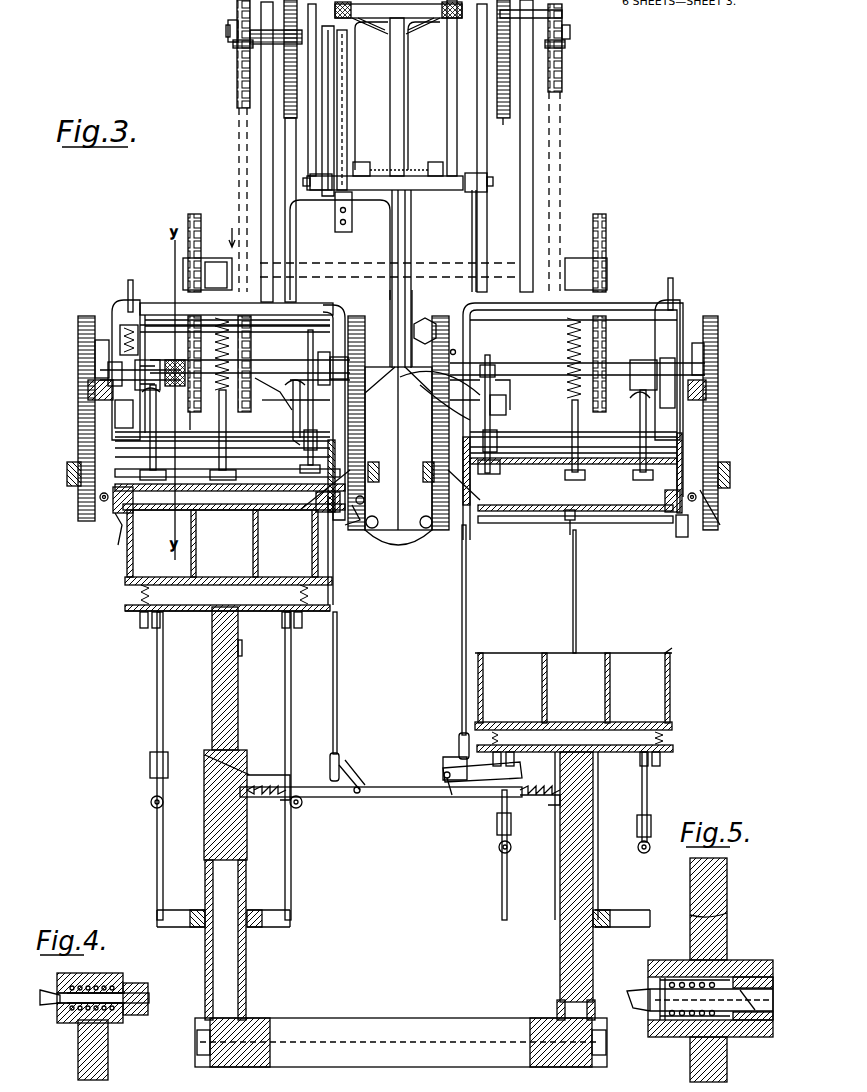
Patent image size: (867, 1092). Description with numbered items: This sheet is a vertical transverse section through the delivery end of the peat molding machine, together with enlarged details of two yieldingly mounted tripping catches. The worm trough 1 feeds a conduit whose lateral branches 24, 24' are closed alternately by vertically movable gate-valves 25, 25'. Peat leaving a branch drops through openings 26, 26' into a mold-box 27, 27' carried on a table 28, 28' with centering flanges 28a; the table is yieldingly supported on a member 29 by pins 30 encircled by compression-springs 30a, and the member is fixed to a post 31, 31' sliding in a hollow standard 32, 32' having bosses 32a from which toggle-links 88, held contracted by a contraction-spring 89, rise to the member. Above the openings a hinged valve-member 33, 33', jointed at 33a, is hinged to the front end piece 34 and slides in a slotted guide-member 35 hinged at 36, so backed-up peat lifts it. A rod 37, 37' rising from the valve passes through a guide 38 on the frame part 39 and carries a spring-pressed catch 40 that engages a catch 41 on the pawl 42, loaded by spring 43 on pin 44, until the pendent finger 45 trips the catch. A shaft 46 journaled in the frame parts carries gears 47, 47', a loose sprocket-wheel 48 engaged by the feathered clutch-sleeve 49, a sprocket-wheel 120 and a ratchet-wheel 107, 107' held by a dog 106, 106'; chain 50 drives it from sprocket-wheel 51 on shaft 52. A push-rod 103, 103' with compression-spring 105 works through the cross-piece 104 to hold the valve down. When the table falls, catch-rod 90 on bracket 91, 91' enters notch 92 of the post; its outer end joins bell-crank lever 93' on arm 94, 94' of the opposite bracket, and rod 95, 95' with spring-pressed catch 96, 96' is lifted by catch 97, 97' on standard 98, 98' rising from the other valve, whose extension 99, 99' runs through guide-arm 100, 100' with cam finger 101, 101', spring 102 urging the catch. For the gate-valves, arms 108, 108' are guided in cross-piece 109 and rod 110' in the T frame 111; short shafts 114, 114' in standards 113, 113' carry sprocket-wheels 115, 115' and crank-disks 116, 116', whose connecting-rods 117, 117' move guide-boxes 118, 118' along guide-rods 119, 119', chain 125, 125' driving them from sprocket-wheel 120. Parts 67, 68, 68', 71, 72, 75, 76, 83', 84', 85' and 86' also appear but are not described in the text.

In FIG. 3, the trough 1 is at (398, 540).
In FIG. 3, the lateral branch 24 is at (320, 401).
In FIG. 3, the lateral branch 24' is at (570, 465).
In FIG. 3, the gate-valve 25 is at (371, 325).
In FIG. 3, the gate-valve 25' is at (434, 339).
In FIG. 3, the discharge opening 26 is at (222, 527).
In FIG. 3, the discharge opening 26' is at (575, 533).
In FIG. 3, the mold-box 27 is at (222, 543).
In FIG. 3, the mold-box 27' is at (573, 685).
In FIG. 3, the table 28 is at (205, 585).
In FIG. 3, the table 28' is at (592, 744).
In FIG. 3, the flanges 28a is at (334, 580).
In FIG. 3, the table member 29 is at (195, 612).
In FIG. 3, the pins 30 is at (142, 628).
In FIG. 3, the coiled compression-springs 30a is at (149, 597).
In FIG. 3, the post 31 is at (235, 854).
In FIG. 3, the post 31' is at (589, 886).
In FIG. 3, the standard 32 is at (208, 805).
In FIG. 3, the standard 32' is at (589, 836).
In FIG. 3, the bosses 32a is at (175, 927).
In FIG. 3, the valve-member 33 is at (230, 471).
In FIG. 3, the valve-member 33' is at (573, 421).
In FIG. 3, the hinge 33a is at (240, 472).
In FIG. 3, the front end piece 34 is at (118, 412).
In FIG. 3, the slotted guide-member 35 is at (245, 445).
In FIG. 3, the hinge 36 is at (242, 412).
In FIG. 3, the rod 37 is at (157, 465).
In FIG. 4, the rod 37 is at (74, 1050).
In FIG. 3, the rod 37' is at (632, 435).
In FIG. 3, the guide 38 is at (156, 400).
In FIG. 3, the frame part 39 is at (340, 330).
In FIG. 3, the spring-pressed catch 40 is at (150, 362).
In FIG. 4, the spring-pressed catch 40 is at (48, 1000).
In FIG. 3, the catch 41 is at (100, 372).
In FIG. 3, the pawl 42 is at (108, 372).
In FIG. 3, the coiled spring 43 is at (118, 318).
In FIG. 3, the pin 44 is at (120, 290).
In FIG. 3, the pendent finger 45 is at (138, 340).
In FIG. 3, the shaft 46 is at (296, 364).
In FIG. 3, the gear 47 is at (211, 418).
In FIG. 3, the gear 47' is at (657, 372).
In FIG. 3, the loose sprocket-wheel 48 is at (194, 420).
In FIG. 3, the feathered clutch-sleeve 49 is at (175, 360).
In FIG. 3, the chain 50 is at (190, 285).
In FIG. 3, the sprocket-wheel 51 is at (194, 214).
In FIG. 3, the shaft 52 is at (282, 268).
In FIG. 3, the gear 67 is at (78, 438).
In FIG. 3, the bearing block 68 is at (235, 481).
In FIG. 3, the bearing block 68' is at (712, 473).
In FIG. 3, the bracket 71 is at (133, 502).
In FIG. 3, the partition 72 is at (222, 512).
In FIG. 3, the lever 75 is at (115, 528).
In FIG. 3, the pivot bolt 76 is at (100, 503).
In FIG. 3, the rod 83' is at (592, 591).
In FIG. 3, the rod 84' is at (555, 540).
In FIG. 3, the plate 85' is at (575, 530).
In FIG. 3, the bolt 86' is at (684, 527).
In FIG. 3, the toggle-links 88 is at (157, 710).
In FIG. 3, the coiled contraction-spring 89 is at (150, 802).
In FIG. 3, the catch-rod 90 is at (352, 797).
In FIG. 3, the bracket 91 is at (247, 798).
In FIG. 3, the bracket 91' is at (528, 853).
In FIG. 3, the notch 92 is at (240, 650).
In FIG. 3, the bell-crank lever 93' is at (433, 776).
In FIG. 3, the arm 94 is at (298, 412).
In FIG. 3, the arm 94' is at (482, 792).
In FIG. 3, the rod 95 is at (346, 690).
In FIG. 3, the rod 95' is at (444, 642).
In FIG. 3, the spring-pressed catch 96 is at (323, 401).
In FIG. 3, the spring-pressed catch 96' is at (422, 395).
In FIG. 3, the catch 97 is at (343, 469).
In FIG. 5, the catch 97 is at (711, 1005).
In FIG. 3, the catch 97' is at (439, 465).
In FIG. 3, the rod or standard 98 is at (306, 439).
In FIG. 5, the rod or standard 98 is at (723, 1059).
In FIG. 3, the rod or standard 98' is at (510, 434).
In FIG. 5, the extension 99 is at (723, 909).
In FIG. 3, the extension 99' is at (491, 397).
In FIG. 3, the guide-arm 100 is at (273, 393).
In FIG. 3, the guide-arm 100' is at (520, 393).
In FIG. 3, the pendent finger 101 is at (276, 401).
In FIG. 3, the pendent finger 101' is at (519, 404).
In FIG. 5, the coiled spring 102 is at (670, 1037).
In FIG. 3, the push-rod 103 is at (211, 465).
In FIG. 3, the push-rod 103' is at (586, 398).
In FIG. 3, the cross-piece 104 is at (300, 308).
In FIG. 3, the coiled compression-spring 105 is at (196, 412).
In FIG. 3, the dog 106 is at (74, 396).
In FIG. 3, the dog 106' is at (722, 390).
In FIG. 3, the ratchet-wheel 107 is at (80, 358).
In FIG. 3, the ratchet-wheel 107' is at (725, 356).
In FIG. 3, the gate arm 108 is at (356, 110).
In FIG. 3, the gate arm 108' is at (420, 279).
In FIG. 3, the cross-piece 109 is at (422, 190).
In FIG. 3, the rod 110' is at (432, 88).
In FIG. 3, the T frame 111 is at (404, 46).
In FIG. 3, the standard 113 is at (251, 152).
In FIG. 3, the standard 113' is at (524, 146).
In FIG. 3, the short shaft 114 is at (218, 54).
In FIG. 3, the short shaft 114' is at (578, 48).
In FIG. 3, the sprocket-wheel 115 is at (219, 53).
In FIG. 3, the sprocket-wheel 115' is at (576, 52).
In FIG. 3, the crank-disk 116 is at (289, 151).
In FIG. 3, the crank-disk 116' is at (506, 71).
In FIG. 3, the connecting-rod 117 is at (296, 90).
In FIG. 3, the connecting-rod 117' is at (500, 148).
In FIG. 3, the guide-box 118 is at (314, 203).
In FIG. 3, the guide-box 118' is at (491, 185).
In FIG. 3, the guide-rod 119 is at (348, 111).
In FIG. 3, the guide-rod 119' is at (494, 241).
In FIG. 3, the sprocket-wheel 120 is at (262, 345).
In FIG. 3, the chain 125 is at (221, 200).
In FIG. 3, the chain 125' is at (576, 192).